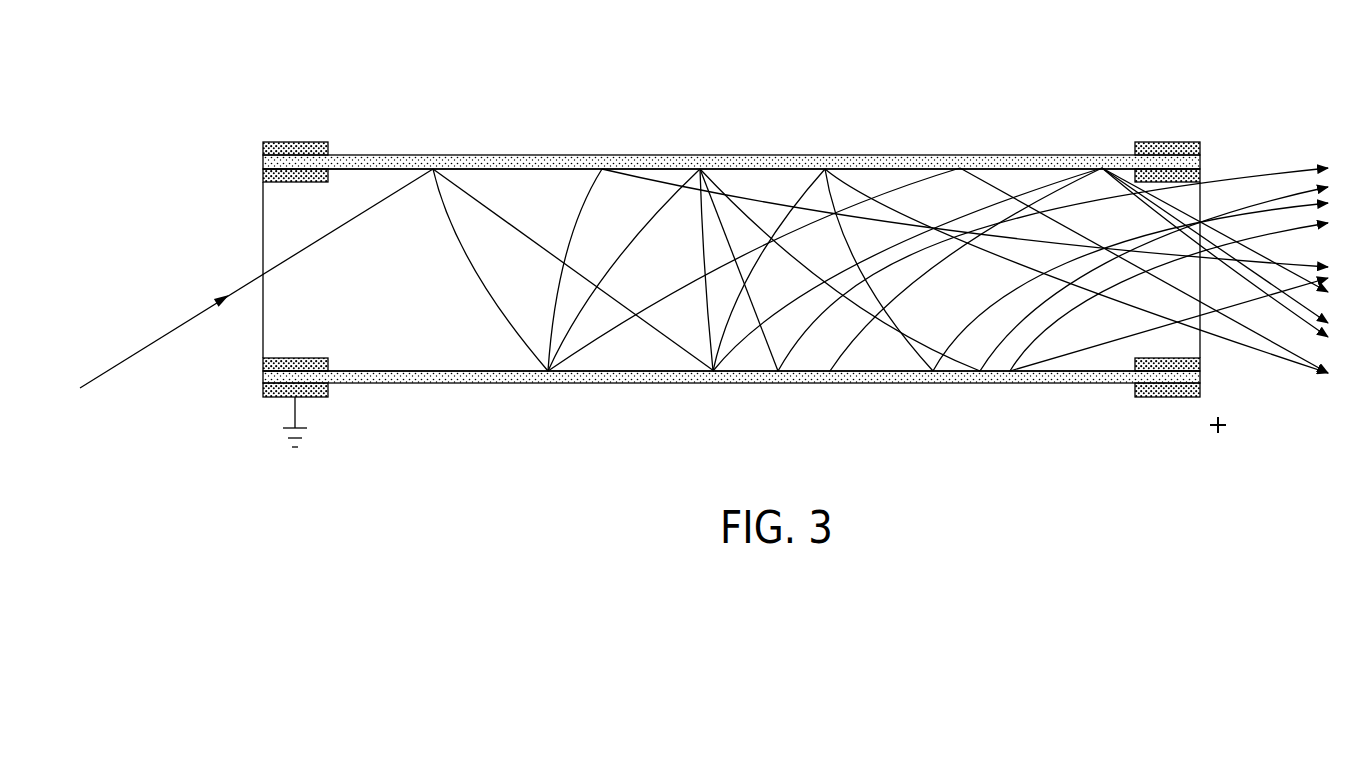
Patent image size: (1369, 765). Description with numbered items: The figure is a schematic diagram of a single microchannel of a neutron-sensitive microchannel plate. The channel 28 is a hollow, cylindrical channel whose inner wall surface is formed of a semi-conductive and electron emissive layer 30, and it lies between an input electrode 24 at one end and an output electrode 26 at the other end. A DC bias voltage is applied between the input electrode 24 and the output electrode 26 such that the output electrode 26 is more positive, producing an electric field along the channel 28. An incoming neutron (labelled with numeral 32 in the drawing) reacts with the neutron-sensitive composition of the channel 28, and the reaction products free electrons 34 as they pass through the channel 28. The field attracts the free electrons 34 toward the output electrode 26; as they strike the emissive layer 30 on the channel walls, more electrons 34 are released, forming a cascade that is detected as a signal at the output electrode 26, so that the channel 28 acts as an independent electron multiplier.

The input electrode 24 is at (292, 144).
The output electrode 26 is at (1170, 397).
The channel 28 is at (608, 388).
The semi-conductive and electron emissive layer 30 is at (848, 155).
The input neutron 32 is at (155, 340).
The electrons 34 is at (490, 210).